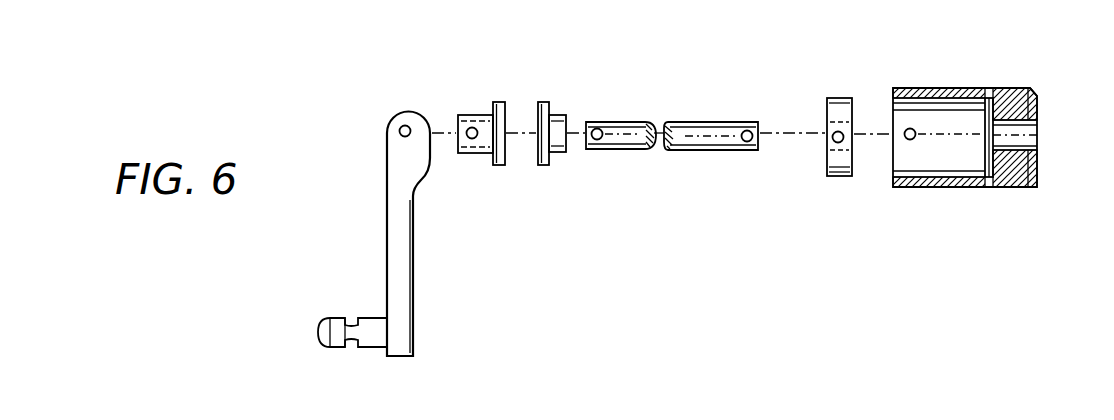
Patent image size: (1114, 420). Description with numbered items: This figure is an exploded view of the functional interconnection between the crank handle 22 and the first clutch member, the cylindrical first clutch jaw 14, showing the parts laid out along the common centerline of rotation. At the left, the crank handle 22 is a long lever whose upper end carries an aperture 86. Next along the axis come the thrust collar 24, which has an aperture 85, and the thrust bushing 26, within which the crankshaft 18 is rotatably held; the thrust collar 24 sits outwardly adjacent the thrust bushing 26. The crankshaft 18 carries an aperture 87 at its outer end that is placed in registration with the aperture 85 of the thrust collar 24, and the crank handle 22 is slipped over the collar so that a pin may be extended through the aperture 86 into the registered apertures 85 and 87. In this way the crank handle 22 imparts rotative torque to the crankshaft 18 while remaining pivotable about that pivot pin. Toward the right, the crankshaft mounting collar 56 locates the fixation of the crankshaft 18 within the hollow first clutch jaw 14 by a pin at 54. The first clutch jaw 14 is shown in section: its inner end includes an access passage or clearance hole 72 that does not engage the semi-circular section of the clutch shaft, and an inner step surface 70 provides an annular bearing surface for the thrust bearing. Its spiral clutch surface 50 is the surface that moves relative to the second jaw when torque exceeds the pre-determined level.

The first clutch jaw 14 is at (958, 88).
The crankshaft 18 is at (690, 122).
The crank handle 22 is at (410, 290).
The thrust collar 24 is at (500, 102).
The thrust bushing 26 is at (556, 115).
The spiral clutch surface 50 is at (1040, 96).
The pin 54 is at (913, 132).
The crankshaft mounting collar 56 is at (840, 97).
The inner step surface 70 is at (1005, 165).
The access passage 72 is at (1010, 108).
The aperture 85 is at (472, 127).
The aperture 86 is at (405, 125).
The aperture 87 is at (597, 128).